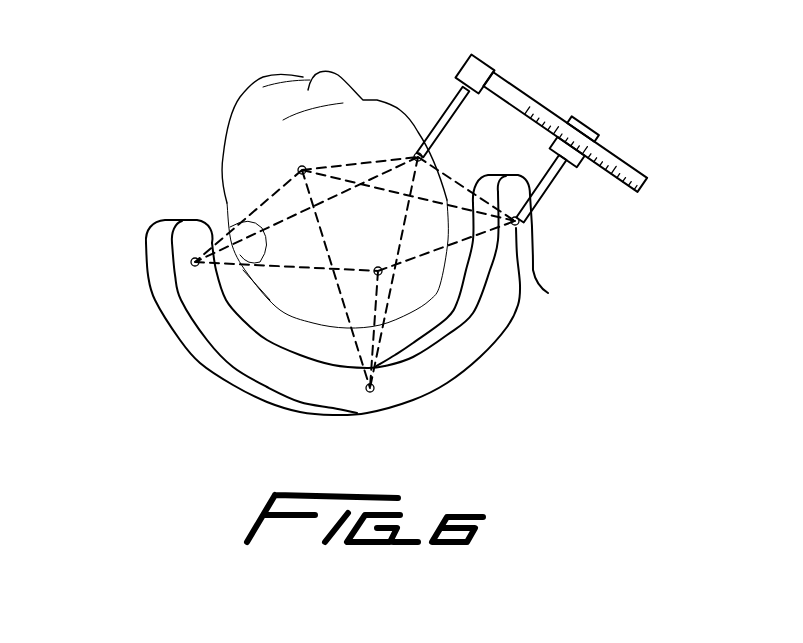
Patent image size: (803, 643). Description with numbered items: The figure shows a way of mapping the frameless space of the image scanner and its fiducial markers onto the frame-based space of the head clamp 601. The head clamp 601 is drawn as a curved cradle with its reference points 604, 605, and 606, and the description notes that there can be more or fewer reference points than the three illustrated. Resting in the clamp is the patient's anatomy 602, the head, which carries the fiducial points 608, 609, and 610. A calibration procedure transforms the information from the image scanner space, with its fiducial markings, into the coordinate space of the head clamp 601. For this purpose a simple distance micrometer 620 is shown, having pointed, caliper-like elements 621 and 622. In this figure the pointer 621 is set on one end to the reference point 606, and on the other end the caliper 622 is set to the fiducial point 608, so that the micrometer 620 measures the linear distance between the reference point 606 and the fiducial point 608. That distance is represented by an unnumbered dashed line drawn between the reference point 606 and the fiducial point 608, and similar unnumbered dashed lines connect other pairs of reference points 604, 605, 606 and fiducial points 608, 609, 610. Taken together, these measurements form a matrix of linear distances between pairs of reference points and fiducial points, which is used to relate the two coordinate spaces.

The head clamp 601 is at (217, 330).
The patient's anatomy 602 is at (378, 98).
The reference point 604 is at (191, 262).
The reference point 605 is at (372, 392).
The reference point 606 is at (545, 291).
The fiducial point 608 is at (416, 153).
The fiducial point 609 is at (381, 274).
The fiducial point 610 is at (298, 169).
The distance micrometer 620 is at (550, 113).
The pointer 621 is at (549, 176).
The caliper 622 is at (452, 115).